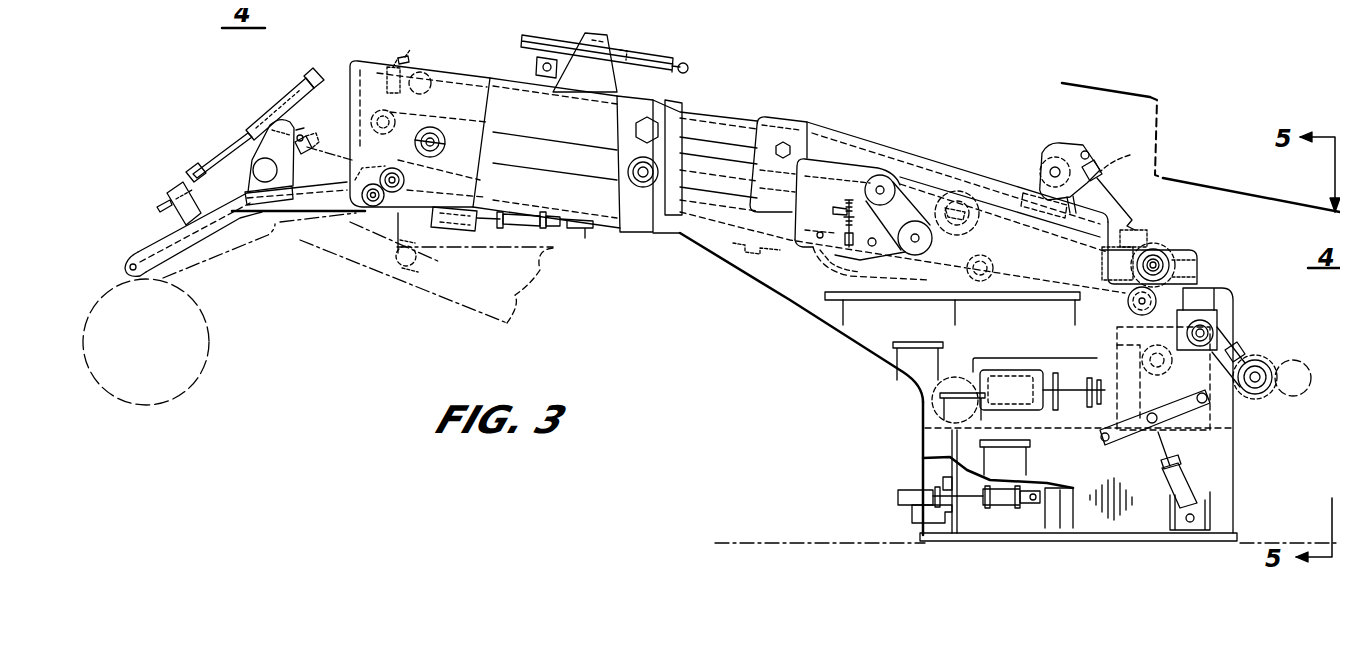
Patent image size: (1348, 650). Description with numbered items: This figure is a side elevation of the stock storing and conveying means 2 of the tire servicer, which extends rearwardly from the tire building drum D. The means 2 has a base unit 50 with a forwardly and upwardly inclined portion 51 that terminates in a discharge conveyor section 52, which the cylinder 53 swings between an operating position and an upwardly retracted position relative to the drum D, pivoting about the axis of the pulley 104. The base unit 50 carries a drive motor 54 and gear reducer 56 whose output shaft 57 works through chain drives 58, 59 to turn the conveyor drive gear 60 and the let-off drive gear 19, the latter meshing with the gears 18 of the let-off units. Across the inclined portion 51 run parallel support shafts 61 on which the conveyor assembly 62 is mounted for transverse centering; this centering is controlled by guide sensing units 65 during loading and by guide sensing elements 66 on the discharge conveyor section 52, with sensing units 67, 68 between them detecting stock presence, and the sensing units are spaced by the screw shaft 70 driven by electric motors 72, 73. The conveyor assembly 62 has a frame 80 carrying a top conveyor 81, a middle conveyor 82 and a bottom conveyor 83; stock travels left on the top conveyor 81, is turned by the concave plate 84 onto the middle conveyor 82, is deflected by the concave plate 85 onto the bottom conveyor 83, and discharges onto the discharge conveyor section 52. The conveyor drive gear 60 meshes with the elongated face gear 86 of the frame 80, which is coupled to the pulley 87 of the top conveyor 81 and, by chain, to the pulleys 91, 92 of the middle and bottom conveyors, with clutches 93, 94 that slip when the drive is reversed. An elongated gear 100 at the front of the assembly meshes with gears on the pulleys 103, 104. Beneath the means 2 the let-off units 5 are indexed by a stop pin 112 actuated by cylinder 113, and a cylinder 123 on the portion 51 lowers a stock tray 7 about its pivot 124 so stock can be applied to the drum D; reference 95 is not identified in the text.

The stock storing and conveying means 2 is at (784, 118).
The stock let-off units 5 is at (456, 308).
The stock tray 7 is at (232, 256).
The tire building drum D is at (201, 305).
The gear 18 is at (1303, 396).
The let-off drive gear 19 is at (1270, 365).
The base unit 50 is at (923, 441).
The forwardly and upwardly inclined portion 51 is at (462, 75).
The discharge conveyor section 52 is at (150, 242).
The cylinder 53 is at (286, 100).
The drive motor 54 is at (1030, 366).
The gear reducer 56 is at (1112, 346).
The output shaft 57 is at (1148, 369).
The chain drive 58 is at (1180, 410).
The chain drive 59 is at (1252, 350).
The conveyor drive gear 60 is at (1127, 309).
The support shafts 61 is at (447, 145).
The conveyor assembly 62 is at (720, 163).
The guide sensing units 65 is at (1094, 167).
The guide sensing elements 66 is at (302, 137).
The sensing units 67 is at (1126, 155).
The sensing units 68 is at (305, 150).
The screw shaft 70 is at (1086, 150).
The electric motor 72 is at (1043, 158).
The electric motor 73 is at (253, 165).
The frame 80 is at (688, 196).
The top conveyor 81 is at (705, 112).
The middle conveyor 82 is at (698, 150).
The bottom conveyor 83 is at (556, 158).
The concave plate 84 is at (404, 57).
The concave plate 85 is at (921, 167).
The elongated face gear 86 is at (1160, 256).
The pulley 87 is at (1152, 249).
The pulley 91 is at (881, 175).
The pulley 92 is at (935, 251).
The clutch 93 is at (906, 185).
The clutch 94 is at (905, 252).
The adjusting rail 95 is at (626, 46).
The elongated gear 100 is at (393, 205).
The pulley 103 is at (310, 150).
The pulley 104 is at (366, 211).
The stop pin 112 is at (902, 501).
The cylinder 113 is at (1006, 506).
The cylinder 123 is at (525, 231).
The pivot 124 is at (428, 266).